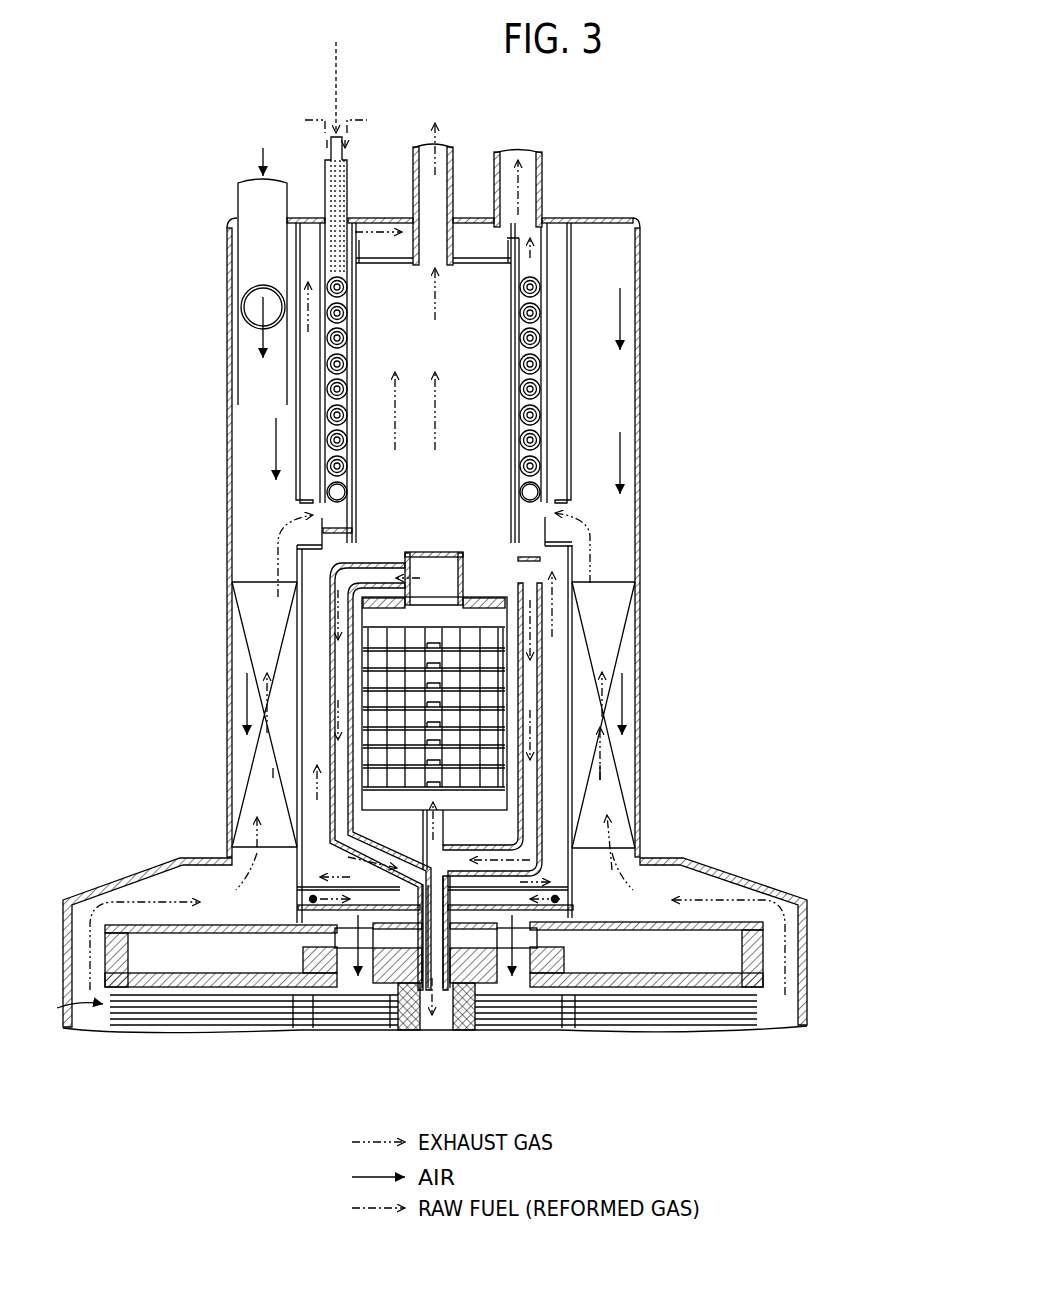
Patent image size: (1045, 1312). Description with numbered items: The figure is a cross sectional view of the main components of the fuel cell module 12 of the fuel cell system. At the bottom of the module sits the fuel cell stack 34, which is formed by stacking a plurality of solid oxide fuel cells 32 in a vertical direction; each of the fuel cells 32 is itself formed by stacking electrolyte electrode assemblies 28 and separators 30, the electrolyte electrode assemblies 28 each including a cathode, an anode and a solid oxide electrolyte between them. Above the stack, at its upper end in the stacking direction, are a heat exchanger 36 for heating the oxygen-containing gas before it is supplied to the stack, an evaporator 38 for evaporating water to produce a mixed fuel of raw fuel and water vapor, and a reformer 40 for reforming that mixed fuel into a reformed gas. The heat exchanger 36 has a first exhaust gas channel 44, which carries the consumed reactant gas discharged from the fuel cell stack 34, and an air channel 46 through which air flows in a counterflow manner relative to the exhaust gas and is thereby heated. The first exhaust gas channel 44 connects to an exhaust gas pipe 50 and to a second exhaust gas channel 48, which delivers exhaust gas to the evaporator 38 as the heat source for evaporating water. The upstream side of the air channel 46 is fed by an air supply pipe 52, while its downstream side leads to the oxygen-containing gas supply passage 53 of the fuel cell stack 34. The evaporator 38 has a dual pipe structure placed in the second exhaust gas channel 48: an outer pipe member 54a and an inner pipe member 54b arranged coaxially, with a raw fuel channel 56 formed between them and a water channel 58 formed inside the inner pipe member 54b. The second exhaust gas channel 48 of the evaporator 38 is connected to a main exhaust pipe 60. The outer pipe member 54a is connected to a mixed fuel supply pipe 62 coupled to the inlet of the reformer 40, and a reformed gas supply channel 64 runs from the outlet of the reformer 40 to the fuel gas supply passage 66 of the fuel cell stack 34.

The fuel cell module 12 is at (194, 119).
The electrolyte electrode assembly 28 is at (707, 1022).
The separator 30 is at (675, 1082).
The solid oxide fuel cell 32 is at (446, 1060).
The fuel cell stack 34 is at (66, 1028).
The heat exchanger 36 is at (226, 644).
The evaporator 38 is at (316, 467).
The reformer 40 is at (357, 650).
The first exhaust gas channel 44 is at (273, 773).
The air channel 46 is at (243, 703).
The second exhaust gas channel 48 is at (292, 514).
The exhaust gas pipe 50 is at (452, 171).
The air supply pipe 52 is at (267, 208).
The oxygen-containing gas supply passage 53 is at (353, 1012).
The outer pipe member 54a is at (337, 182).
The inner pipe member 54b is at (341, 148).
The raw fuel channel 56 is at (348, 288).
The water channel 58 is at (334, 80).
The main exhaust pipe 60 is at (543, 170).
The mixed fuel supply pipe 62 is at (541, 683).
The reformed gas supply channel 64 is at (327, 624).
The fuel gas supply passage 66 is at (423, 1005).